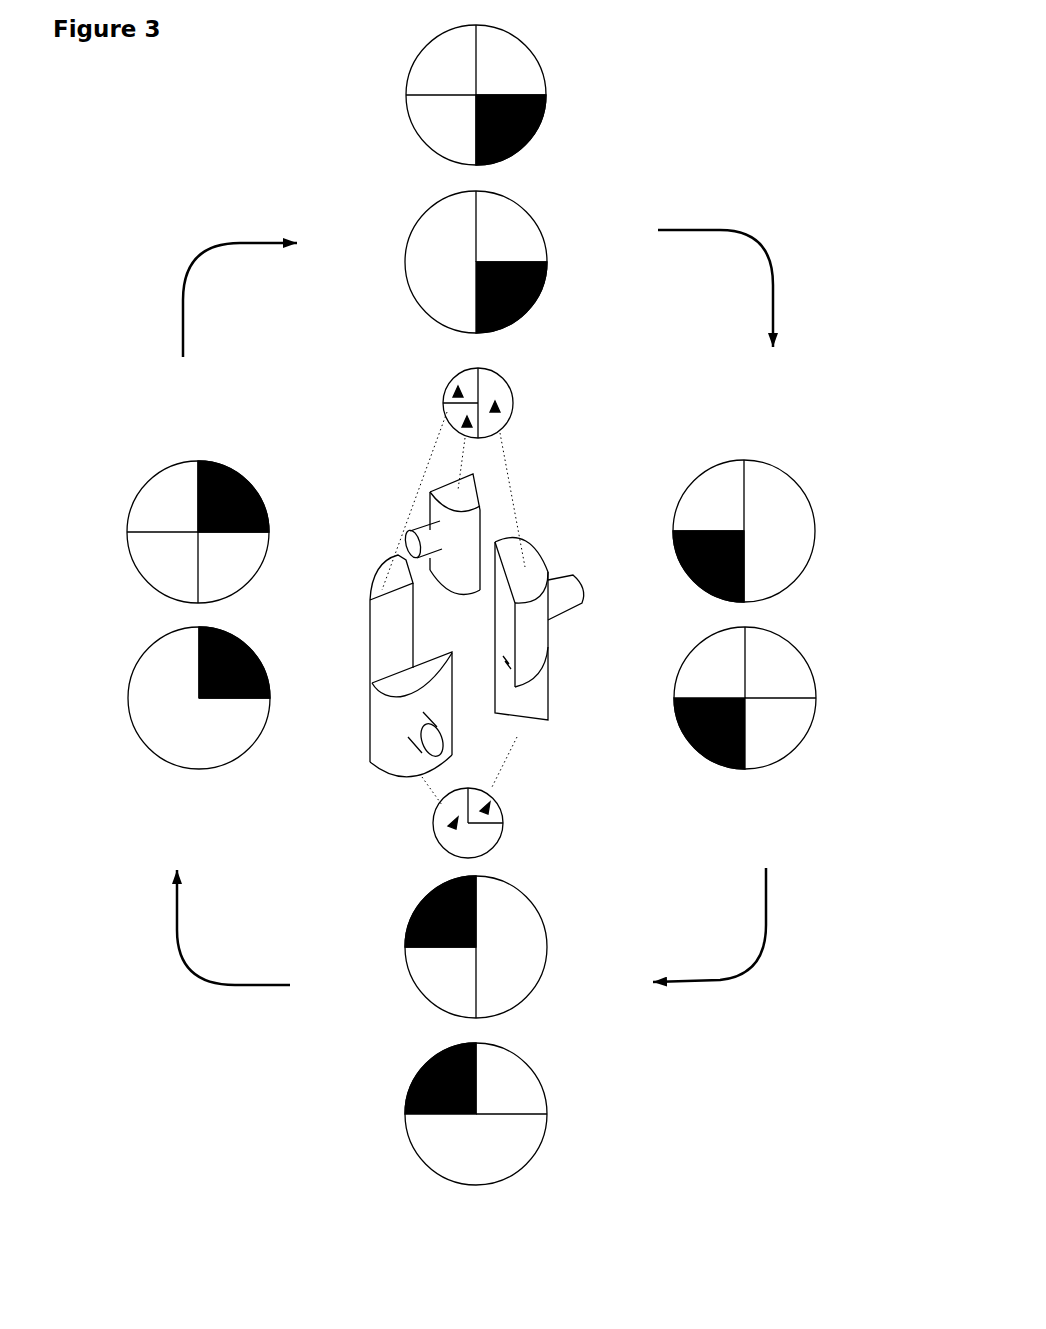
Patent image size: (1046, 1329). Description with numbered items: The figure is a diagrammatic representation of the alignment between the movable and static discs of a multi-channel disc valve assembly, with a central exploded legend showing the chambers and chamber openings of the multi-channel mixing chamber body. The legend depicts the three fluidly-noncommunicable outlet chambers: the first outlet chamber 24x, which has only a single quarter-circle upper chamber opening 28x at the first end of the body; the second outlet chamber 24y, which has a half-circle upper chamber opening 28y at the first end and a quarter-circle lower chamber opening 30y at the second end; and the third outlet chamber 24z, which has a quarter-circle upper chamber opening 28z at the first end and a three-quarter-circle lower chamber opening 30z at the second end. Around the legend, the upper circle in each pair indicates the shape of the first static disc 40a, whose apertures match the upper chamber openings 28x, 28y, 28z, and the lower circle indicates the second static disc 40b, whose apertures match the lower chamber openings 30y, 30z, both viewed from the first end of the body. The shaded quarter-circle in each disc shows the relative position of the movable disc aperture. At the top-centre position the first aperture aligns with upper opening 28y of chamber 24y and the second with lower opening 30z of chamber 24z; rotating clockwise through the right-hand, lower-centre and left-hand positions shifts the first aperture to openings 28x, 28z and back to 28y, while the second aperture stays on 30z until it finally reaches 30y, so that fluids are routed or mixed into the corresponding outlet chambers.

The first static disc 40a is at (402, 62).
The second static disc 40b is at (403, 243).
The first outlet chamber 24x is at (412, 505).
The second outlet chamber 24y is at (552, 538).
The third outlet chamber 24z is at (360, 762).
The upper chamber opening 28x is at (445, 410).
The upper chamber opening 28y is at (508, 388).
The upper chamber opening 28z is at (456, 377).
The lower chamber opening 30y is at (492, 812).
The lower chamber opening 30z is at (442, 835).